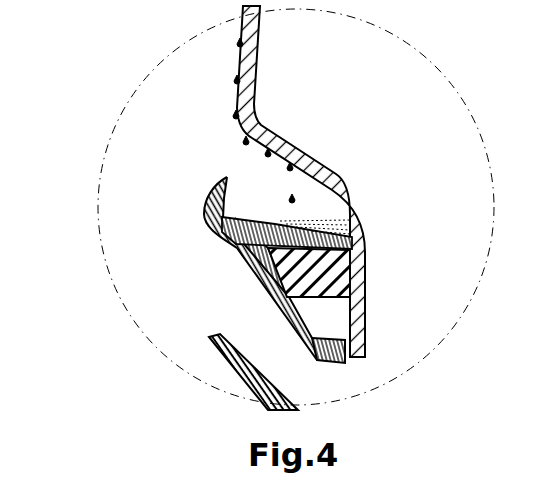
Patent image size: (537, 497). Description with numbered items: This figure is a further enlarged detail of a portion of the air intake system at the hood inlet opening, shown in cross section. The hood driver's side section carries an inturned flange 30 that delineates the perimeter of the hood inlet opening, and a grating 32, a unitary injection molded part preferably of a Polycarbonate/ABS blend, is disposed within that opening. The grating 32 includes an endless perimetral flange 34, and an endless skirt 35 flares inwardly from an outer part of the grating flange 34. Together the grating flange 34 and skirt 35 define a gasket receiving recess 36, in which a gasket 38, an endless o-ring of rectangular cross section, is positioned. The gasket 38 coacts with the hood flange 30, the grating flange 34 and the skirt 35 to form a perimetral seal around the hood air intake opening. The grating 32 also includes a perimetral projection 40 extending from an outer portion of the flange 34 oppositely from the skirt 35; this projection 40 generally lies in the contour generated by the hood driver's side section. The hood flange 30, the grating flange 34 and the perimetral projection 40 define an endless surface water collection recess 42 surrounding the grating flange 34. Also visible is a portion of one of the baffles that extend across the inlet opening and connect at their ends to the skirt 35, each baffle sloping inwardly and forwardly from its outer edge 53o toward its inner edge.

The inturned flange 30 is at (288, 150).
The grating 32 is at (215, 297).
The perimetral flange 34 is at (248, 218).
The skirt 35 is at (266, 283).
The gasket receiving recess 36 is at (230, 267).
The gasket 38 is at (348, 286).
The perimetral projection 40 is at (215, 185).
The surface water collection recess 42 is at (307, 203).
The outer edge 53o is at (208, 345).